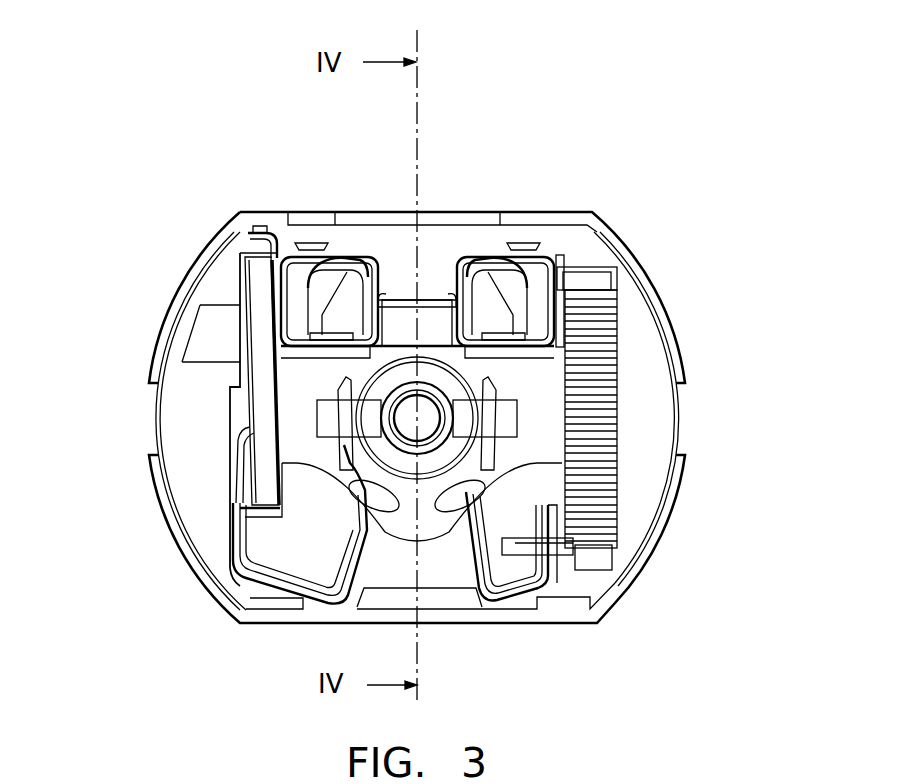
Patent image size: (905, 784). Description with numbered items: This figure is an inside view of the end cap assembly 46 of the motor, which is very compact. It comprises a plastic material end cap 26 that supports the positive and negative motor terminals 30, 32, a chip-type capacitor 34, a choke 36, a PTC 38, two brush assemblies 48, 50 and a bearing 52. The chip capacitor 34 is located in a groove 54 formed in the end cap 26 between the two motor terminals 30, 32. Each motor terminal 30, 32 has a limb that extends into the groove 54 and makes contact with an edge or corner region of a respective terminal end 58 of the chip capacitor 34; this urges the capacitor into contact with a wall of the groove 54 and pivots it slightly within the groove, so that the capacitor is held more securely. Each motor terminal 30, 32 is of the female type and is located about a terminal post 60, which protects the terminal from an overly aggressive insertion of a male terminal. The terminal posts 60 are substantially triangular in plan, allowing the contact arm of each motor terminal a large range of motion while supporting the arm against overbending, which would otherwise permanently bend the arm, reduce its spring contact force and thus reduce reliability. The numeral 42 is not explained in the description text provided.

The end cap 26 is at (627, 340).
The positive motor terminal 30 is at (581, 214).
The negative motor terminal 32 is at (300, 231).
The chip-type capacitor 34 is at (423, 300).
The choke 36 is at (590, 468).
The PTC 38 is at (270, 387).
The tab 42 is at (475, 412).
The end cap assembly 46 is at (163, 96).
The brush assembly 48 is at (455, 503).
The brush assembly 50 is at (363, 513).
The bearing 52 is at (427, 460).
The groove 54 is at (449, 300).
The terminal end 58 is at (352, 262).
The terminal post 60 is at (325, 258).